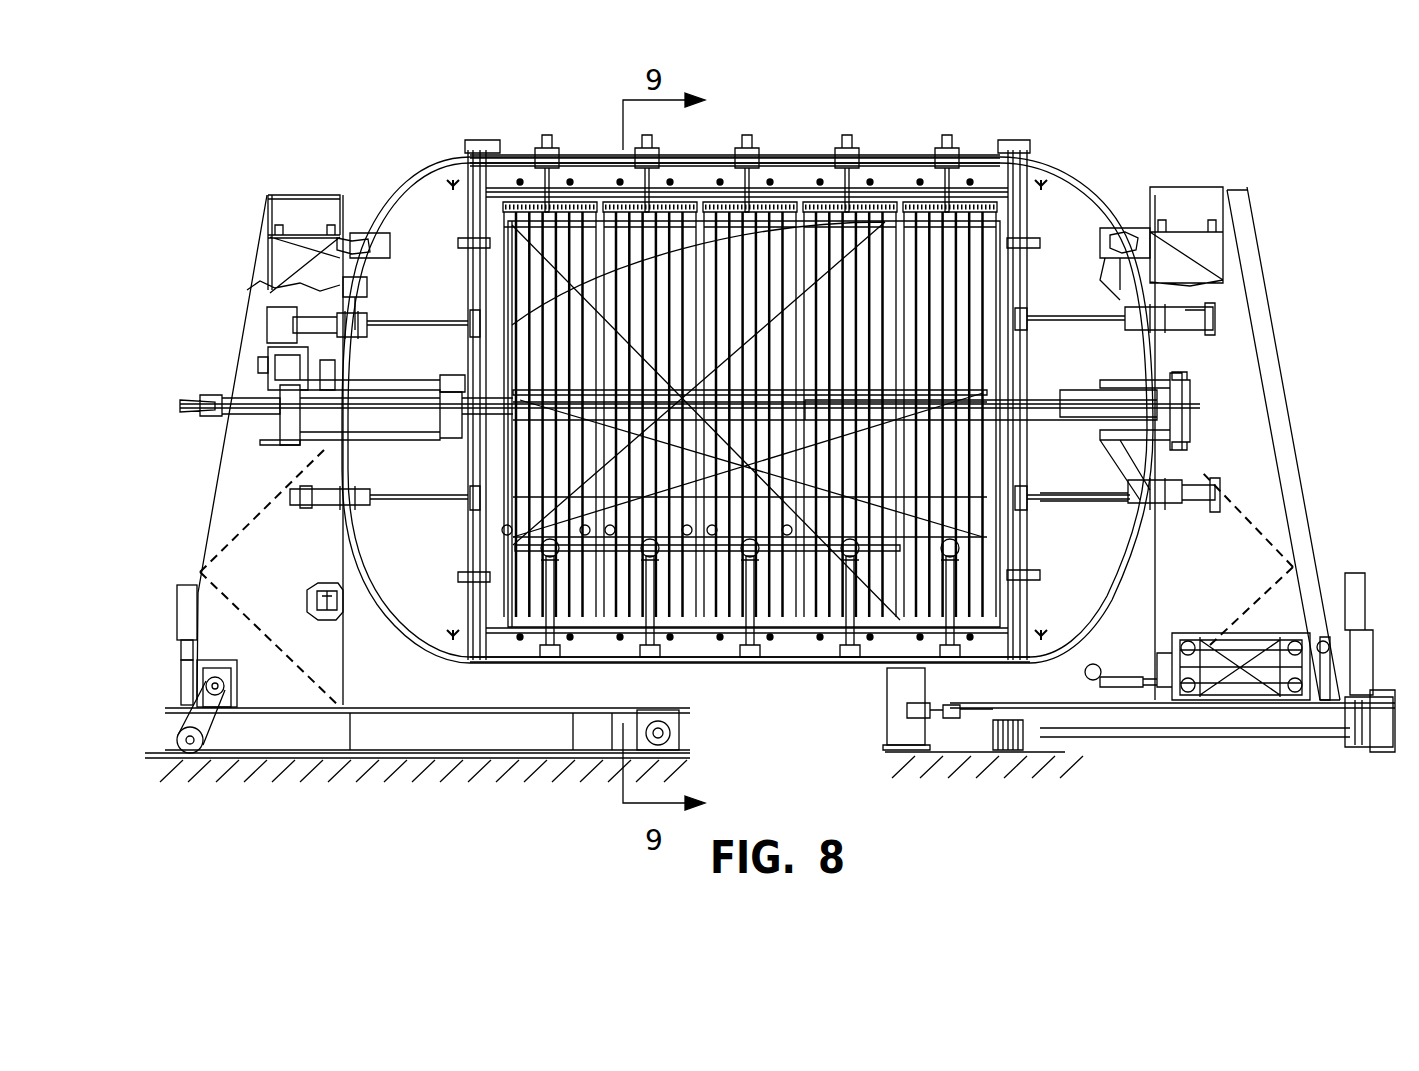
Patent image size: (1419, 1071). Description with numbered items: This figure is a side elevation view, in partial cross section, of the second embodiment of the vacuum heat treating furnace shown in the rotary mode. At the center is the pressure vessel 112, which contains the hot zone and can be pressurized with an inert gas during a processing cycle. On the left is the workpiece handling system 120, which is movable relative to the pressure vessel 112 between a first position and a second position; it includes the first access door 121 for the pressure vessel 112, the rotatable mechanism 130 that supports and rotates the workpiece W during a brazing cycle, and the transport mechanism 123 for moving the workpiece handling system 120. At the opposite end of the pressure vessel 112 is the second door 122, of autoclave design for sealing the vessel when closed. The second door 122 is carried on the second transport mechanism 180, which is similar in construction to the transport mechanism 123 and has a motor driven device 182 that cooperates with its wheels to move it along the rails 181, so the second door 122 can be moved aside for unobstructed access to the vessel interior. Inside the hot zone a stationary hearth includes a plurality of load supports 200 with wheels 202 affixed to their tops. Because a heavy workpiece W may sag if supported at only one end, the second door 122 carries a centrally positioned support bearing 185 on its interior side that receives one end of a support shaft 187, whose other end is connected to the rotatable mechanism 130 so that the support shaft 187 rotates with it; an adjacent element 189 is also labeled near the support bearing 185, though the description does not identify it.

The workpiece handling system 120 is at (230, 238).
The first access door 121 is at (405, 182).
The second door 122 is at (1073, 165).
The transport mechanism 123 is at (222, 525).
The rotatable mechanism 130 is at (262, 375).
The pressure vessel 112 is at (905, 155).
The workpiece W is at (777, 200).
The second transport mechanism 180 is at (1273, 523).
The rails 181 is at (1010, 755).
The motor driven device 182 is at (1370, 613).
The support bearing 185 is at (1120, 390).
The support shaft 187 is at (1045, 425).
The rod 189 is at (1123, 423).
The load supports 200 is at (647, 590).
The wheels 202 is at (640, 520).